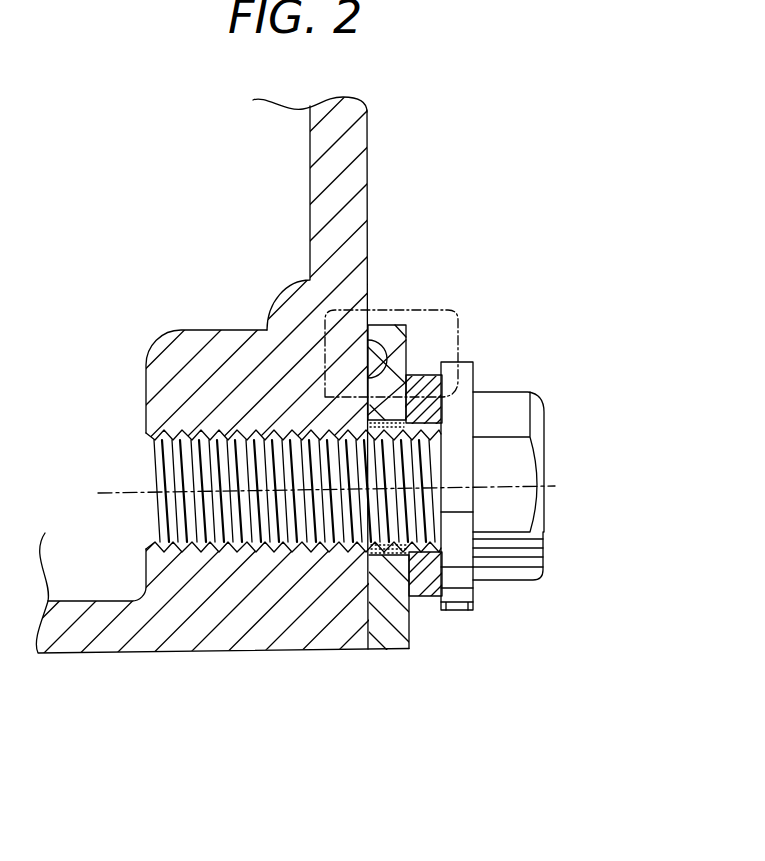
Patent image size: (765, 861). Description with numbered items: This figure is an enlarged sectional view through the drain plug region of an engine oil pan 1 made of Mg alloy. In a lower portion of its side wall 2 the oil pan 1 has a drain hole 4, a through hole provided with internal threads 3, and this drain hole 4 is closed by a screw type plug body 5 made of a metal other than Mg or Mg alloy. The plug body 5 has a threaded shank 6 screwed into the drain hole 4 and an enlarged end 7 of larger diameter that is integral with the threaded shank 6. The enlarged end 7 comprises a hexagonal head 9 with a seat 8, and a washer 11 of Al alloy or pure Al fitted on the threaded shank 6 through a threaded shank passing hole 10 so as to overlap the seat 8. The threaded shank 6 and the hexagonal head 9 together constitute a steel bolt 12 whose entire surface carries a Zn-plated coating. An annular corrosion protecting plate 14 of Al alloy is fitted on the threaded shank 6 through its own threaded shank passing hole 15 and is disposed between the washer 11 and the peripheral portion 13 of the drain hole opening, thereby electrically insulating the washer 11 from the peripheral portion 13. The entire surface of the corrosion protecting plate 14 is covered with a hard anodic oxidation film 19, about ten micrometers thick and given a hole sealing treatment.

The oil pan 1 is at (390, 162).
The side wall 2 is at (357, 220).
The internal threads 3 is at (232, 447).
The drain hole 4 is at (147, 463).
The plug body 5 is at (556, 405).
The threaded shank 6 is at (250, 548).
The enlarged end 7 is at (555, 515).
The seat 8 is at (463, 612).
The hexagonal head 9 is at (521, 567).
The threaded shank passing hole 10 is at (423, 596).
The washer 11 is at (427, 376).
The bolt 12 is at (318, 560).
The peripheral portion of the opening 13 is at (367, 347).
The corrosion protecting plate 14 is at (414, 328).
The threaded shank passing hole 15 is at (377, 555).
The hard anodic oxidation film 19 is at (370, 427).